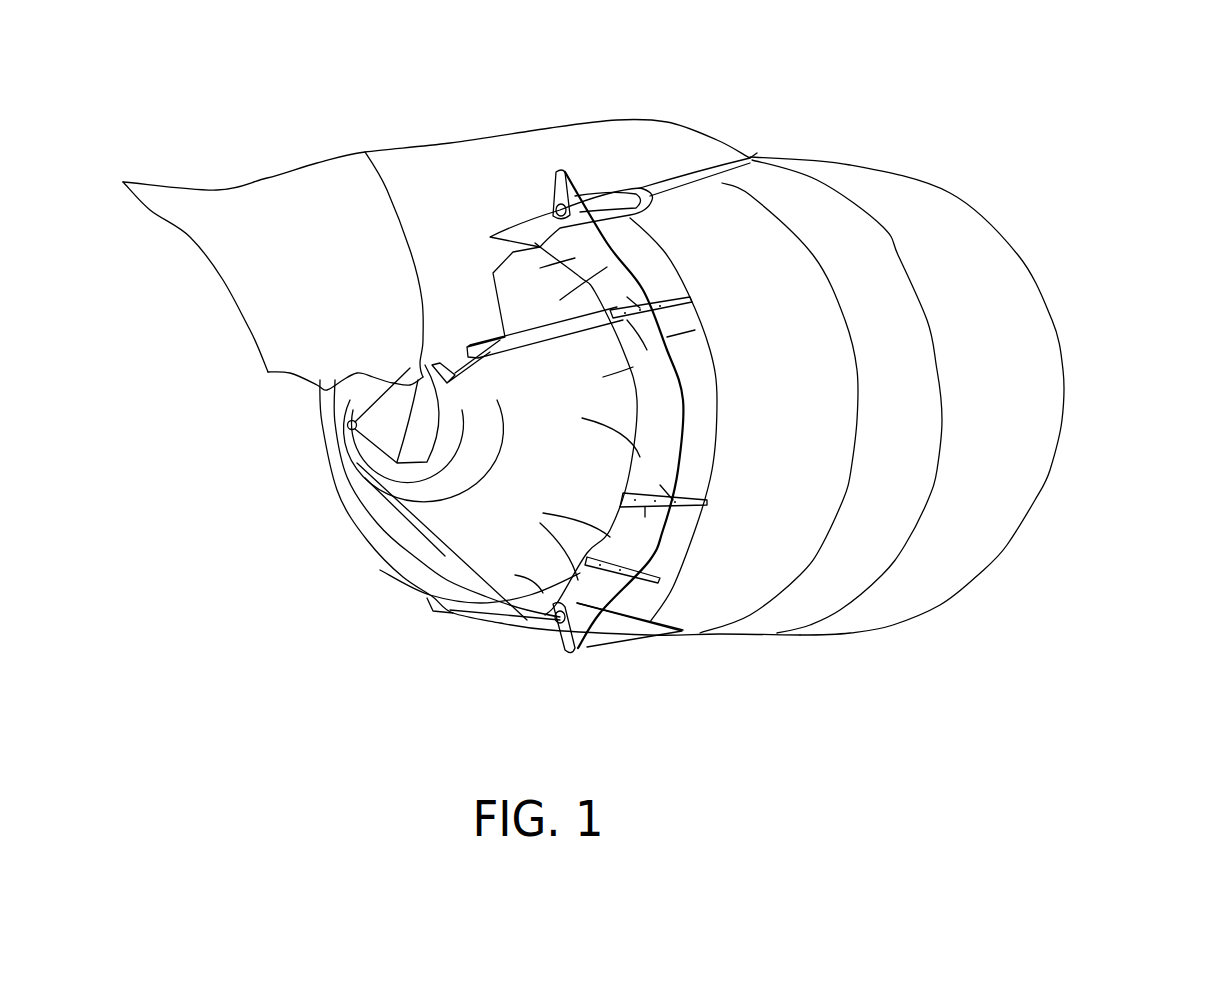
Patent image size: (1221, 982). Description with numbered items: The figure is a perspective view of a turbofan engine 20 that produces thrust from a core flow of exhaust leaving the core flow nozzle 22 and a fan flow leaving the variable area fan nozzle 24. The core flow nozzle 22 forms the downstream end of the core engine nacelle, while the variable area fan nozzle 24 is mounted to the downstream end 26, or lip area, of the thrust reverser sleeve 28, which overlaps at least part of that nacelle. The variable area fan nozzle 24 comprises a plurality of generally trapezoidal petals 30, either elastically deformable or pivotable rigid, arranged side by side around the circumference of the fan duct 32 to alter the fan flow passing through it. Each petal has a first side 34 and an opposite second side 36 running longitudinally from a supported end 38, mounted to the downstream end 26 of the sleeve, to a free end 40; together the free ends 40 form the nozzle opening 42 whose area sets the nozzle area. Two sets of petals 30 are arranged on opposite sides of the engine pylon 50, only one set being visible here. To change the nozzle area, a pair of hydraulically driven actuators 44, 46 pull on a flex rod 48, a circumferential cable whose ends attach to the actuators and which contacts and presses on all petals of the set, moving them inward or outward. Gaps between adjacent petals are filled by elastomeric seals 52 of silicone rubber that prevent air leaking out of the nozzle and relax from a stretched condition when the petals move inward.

The engine 20 is at (1040, 118).
The core flow nozzle 22 is at (445, 556).
The variable area fan nozzle 24 is at (592, 466).
The downstream end 26 is at (655, 612).
The thrust reverser sleeve 28 is at (775, 577).
The petals 30 is at (607, 267).
The fan duct 32 is at (788, 180).
The first side 34 is at (597, 555).
The second side 36 is at (605, 578).
The supported end 38 is at (645, 255).
The free end 40 is at (557, 424).
The nozzle opening 42 is at (577, 355).
The actuator 44 is at (563, 638).
The actuator 46 is at (546, 210).
The flex rod 48 is at (667, 337).
The engine pylon 50 is at (607, 133).
The elastomeric seal 52 is at (625, 318).